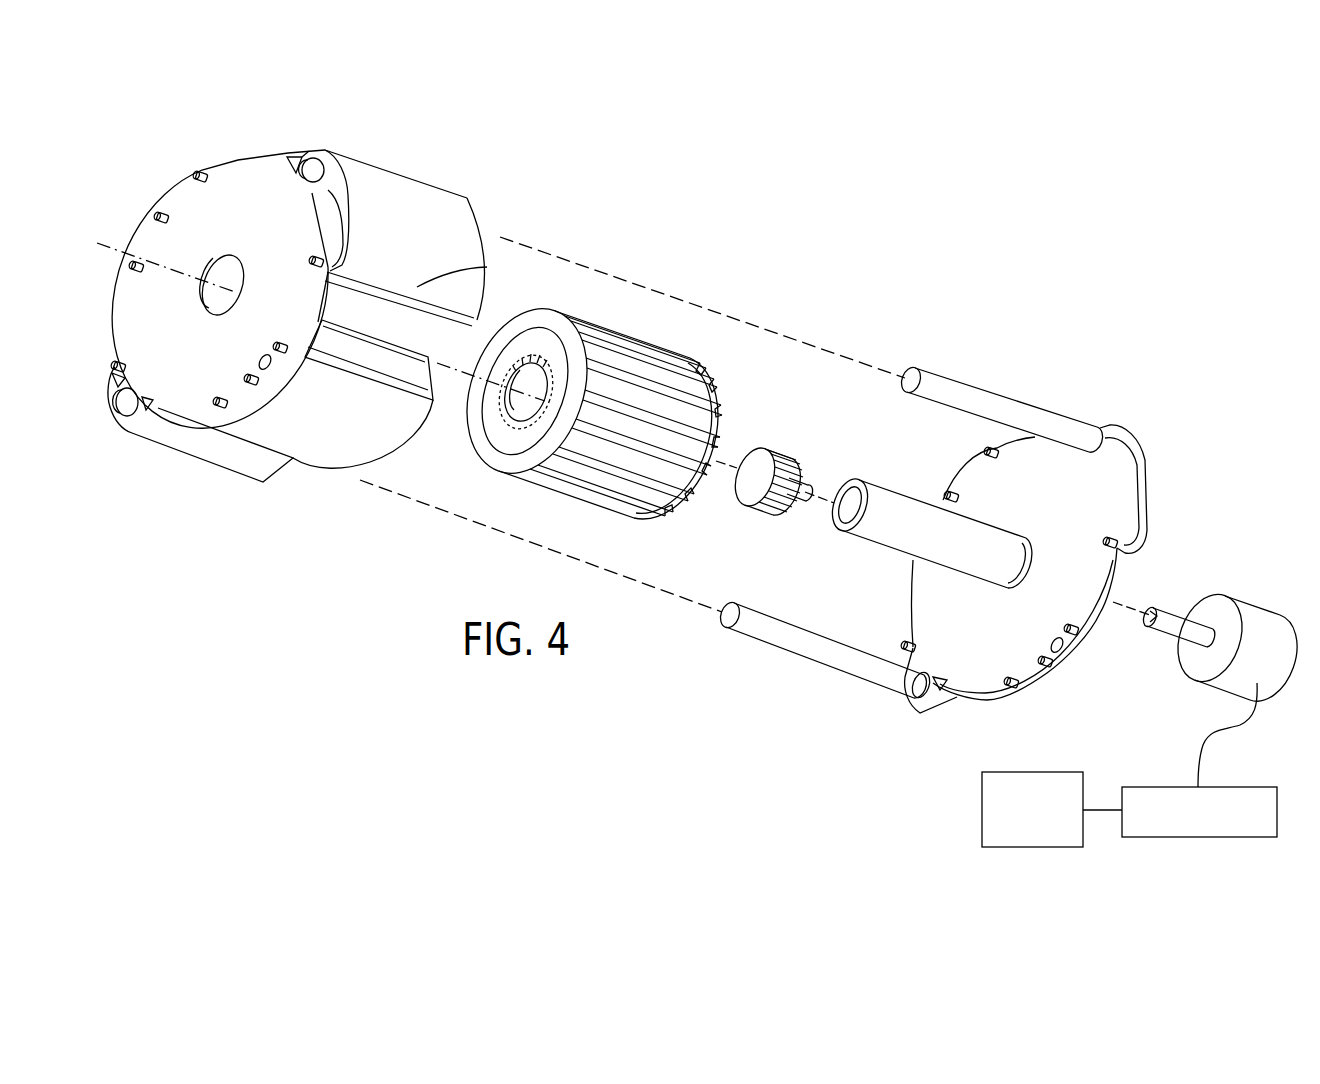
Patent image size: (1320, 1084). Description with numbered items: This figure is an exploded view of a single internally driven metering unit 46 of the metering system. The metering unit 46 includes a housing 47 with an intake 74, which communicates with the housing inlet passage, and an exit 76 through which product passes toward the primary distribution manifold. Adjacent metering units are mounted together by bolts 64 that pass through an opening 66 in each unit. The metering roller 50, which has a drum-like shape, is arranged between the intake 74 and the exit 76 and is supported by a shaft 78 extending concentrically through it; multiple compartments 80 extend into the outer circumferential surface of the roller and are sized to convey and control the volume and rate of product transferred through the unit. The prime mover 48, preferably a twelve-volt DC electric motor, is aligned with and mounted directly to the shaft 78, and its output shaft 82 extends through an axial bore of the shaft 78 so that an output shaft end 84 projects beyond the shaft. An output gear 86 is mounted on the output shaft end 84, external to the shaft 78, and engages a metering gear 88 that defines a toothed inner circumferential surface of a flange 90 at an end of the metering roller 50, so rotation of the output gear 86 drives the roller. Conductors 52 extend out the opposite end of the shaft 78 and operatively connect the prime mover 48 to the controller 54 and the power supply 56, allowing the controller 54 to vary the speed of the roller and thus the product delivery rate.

The metering unit 46 is at (616, 205).
The housing 47 is at (168, 455).
The prime mover 48 is at (1270, 603).
The metering roller 50 is at (641, 328).
The conductors 52 is at (1205, 735).
The controller 54 is at (1200, 838).
The power supply 56 is at (1030, 848).
The bolts 64 is at (973, 397).
The opening 66 is at (310, 160).
The intake 74 is at (143, 255).
The exit 76 is at (367, 307).
The shaft 78 is at (890, 543).
The compartments 80 is at (633, 447).
The output shaft 82 is at (800, 467).
The output shaft end 84 is at (753, 517).
The output gear 86 is at (766, 447).
The metering gear 88 is at (515, 417).
The flange 90 is at (533, 338).